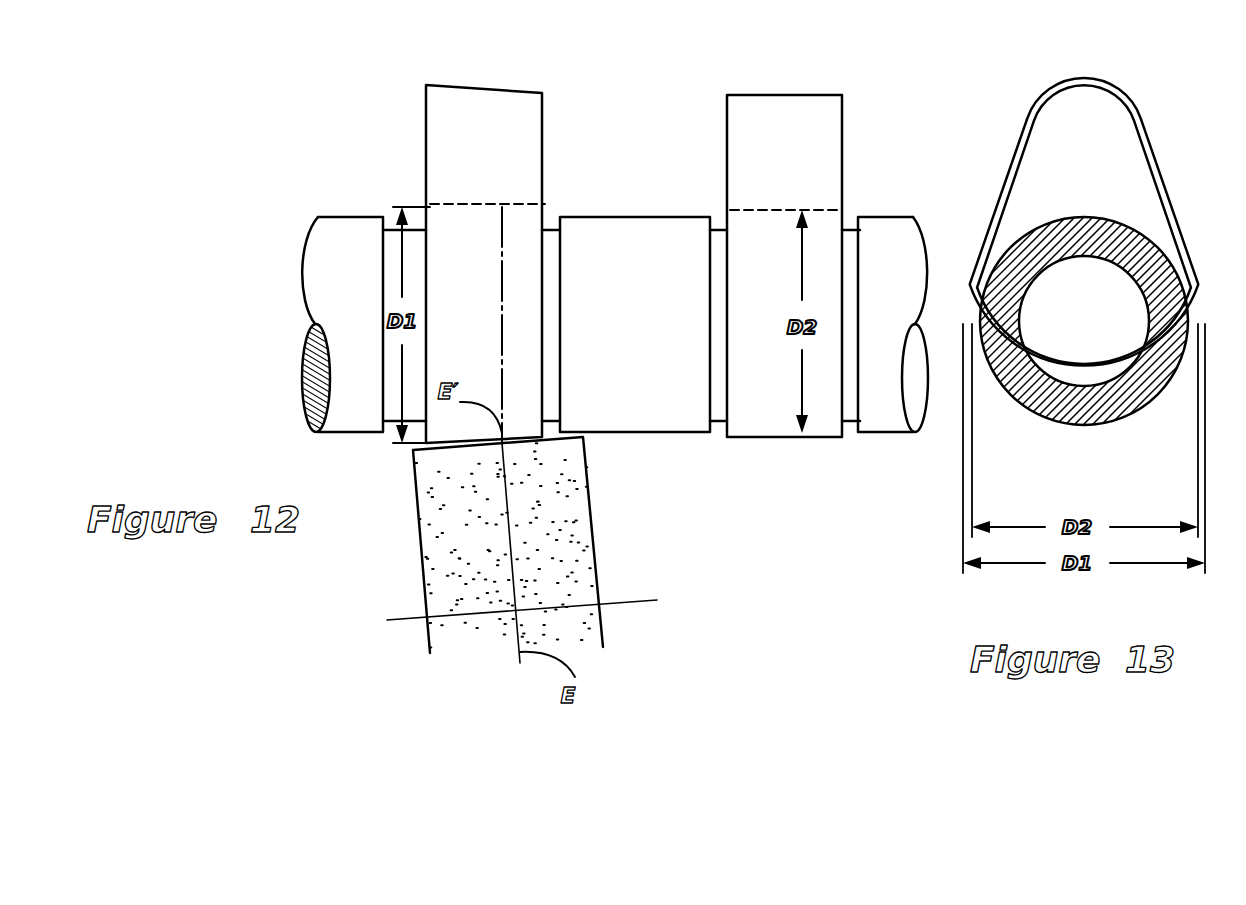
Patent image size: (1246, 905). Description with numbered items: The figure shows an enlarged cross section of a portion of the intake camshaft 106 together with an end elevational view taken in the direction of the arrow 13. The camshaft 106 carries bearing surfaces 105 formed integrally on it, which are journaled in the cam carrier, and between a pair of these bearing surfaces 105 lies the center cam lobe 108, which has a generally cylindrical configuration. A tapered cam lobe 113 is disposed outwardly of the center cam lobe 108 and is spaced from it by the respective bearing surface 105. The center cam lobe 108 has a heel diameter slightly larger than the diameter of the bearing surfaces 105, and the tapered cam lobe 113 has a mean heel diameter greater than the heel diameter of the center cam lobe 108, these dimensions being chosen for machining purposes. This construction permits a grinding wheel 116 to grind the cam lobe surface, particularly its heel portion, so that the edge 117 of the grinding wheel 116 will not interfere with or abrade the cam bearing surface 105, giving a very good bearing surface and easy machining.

In FIG. 12, the arrow 13 is at (278, 112).
In FIG. 12, the bearing surfaces 105 is at (343, 233).
In FIG. 13, the bearing surfaces 105 is at (1085, 217).
In FIG. 12, the intake camshaft 106 is at (623, 120).
In FIG. 13, the intake camshaft 106 is at (982, 149).
In FIG. 12, the center cam lobe 108 is at (777, 110).
In FIG. 13, the center cam lobe 108 is at (1120, 98).
In FIG. 12, the tapered cam lobe 113 is at (483, 98).
In FIG. 13, the tapered cam lobe 113 is at (1092, 82).
In FIG. 12, the grinding wheel 116 is at (548, 601).
In FIG. 12, the edge 117 is at (583, 437).